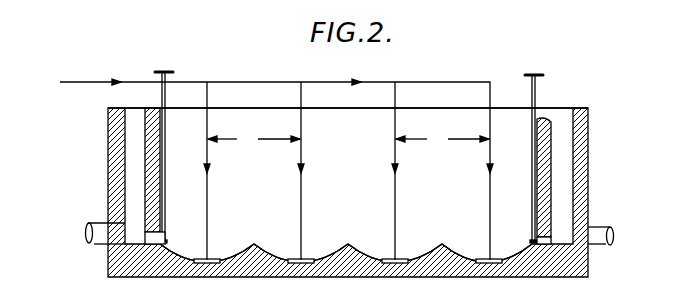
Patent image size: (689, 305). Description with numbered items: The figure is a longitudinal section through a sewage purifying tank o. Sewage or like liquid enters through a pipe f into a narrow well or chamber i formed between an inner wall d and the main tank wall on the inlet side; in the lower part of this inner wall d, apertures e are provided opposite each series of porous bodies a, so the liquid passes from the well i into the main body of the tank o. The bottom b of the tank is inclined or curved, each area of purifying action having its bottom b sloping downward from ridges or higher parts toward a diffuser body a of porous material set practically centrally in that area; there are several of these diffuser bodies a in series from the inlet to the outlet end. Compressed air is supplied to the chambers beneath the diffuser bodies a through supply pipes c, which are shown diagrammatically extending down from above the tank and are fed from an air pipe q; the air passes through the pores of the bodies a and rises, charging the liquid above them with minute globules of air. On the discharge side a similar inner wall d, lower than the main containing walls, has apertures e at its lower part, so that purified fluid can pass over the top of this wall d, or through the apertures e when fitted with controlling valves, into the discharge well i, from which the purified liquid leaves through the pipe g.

The porous diffuser body a is at (215, 258).
The tank bottom b is at (173, 249).
The compressed air supply pipe c is at (348, 139).
The inner wall d is at (158, 161).
The aperture e is at (166, 236).
The inlet pipe f is at (92, 236).
The discharge pipe g is at (602, 247).
The well i is at (125, 165).
The tank o is at (596, 296).
The air pipe q is at (254, 82).